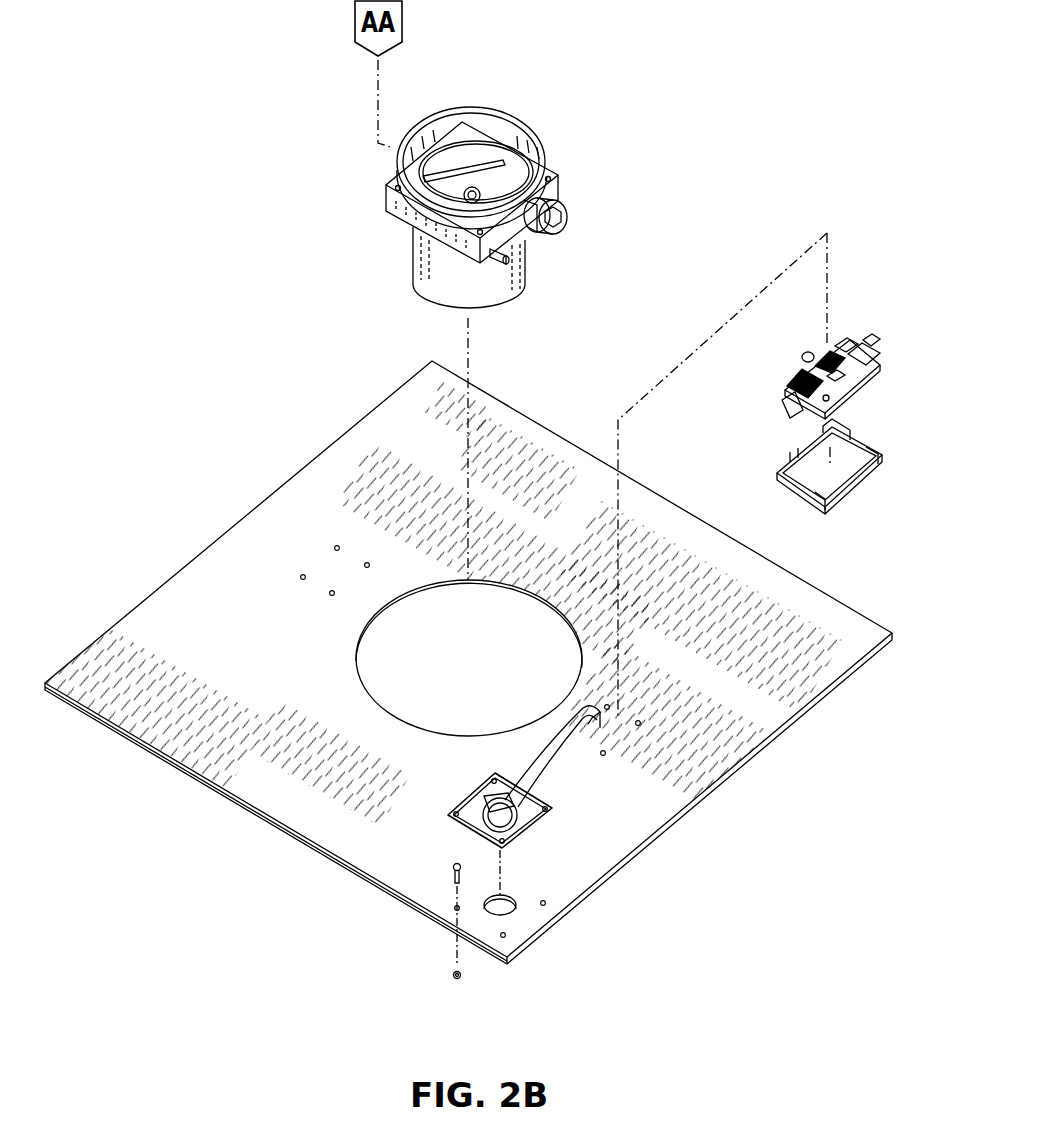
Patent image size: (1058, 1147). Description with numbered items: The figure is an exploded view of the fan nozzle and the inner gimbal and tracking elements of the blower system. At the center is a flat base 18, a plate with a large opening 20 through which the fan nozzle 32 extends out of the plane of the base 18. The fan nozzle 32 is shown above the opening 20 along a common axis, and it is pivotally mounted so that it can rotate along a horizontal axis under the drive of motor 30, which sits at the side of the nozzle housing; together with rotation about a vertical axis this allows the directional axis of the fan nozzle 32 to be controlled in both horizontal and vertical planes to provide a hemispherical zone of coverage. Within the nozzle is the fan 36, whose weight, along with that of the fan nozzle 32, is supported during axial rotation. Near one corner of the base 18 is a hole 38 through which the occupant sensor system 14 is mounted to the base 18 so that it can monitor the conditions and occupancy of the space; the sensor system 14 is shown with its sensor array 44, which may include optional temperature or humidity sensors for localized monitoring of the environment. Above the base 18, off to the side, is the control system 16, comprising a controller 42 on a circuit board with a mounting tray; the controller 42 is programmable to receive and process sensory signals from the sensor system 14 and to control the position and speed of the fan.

The occupant sensor system 14 is at (560, 844).
The control system 16 is at (877, 407).
The base 18 is at (227, 560).
The opening 20 is at (413, 685).
The motor 30 is at (567, 217).
The fan nozzle 32 is at (515, 297).
The fan 36 is at (463, 177).
The hole 38 is at (513, 912).
The controller 42 is at (850, 343).
The sensor array 44 is at (480, 828).